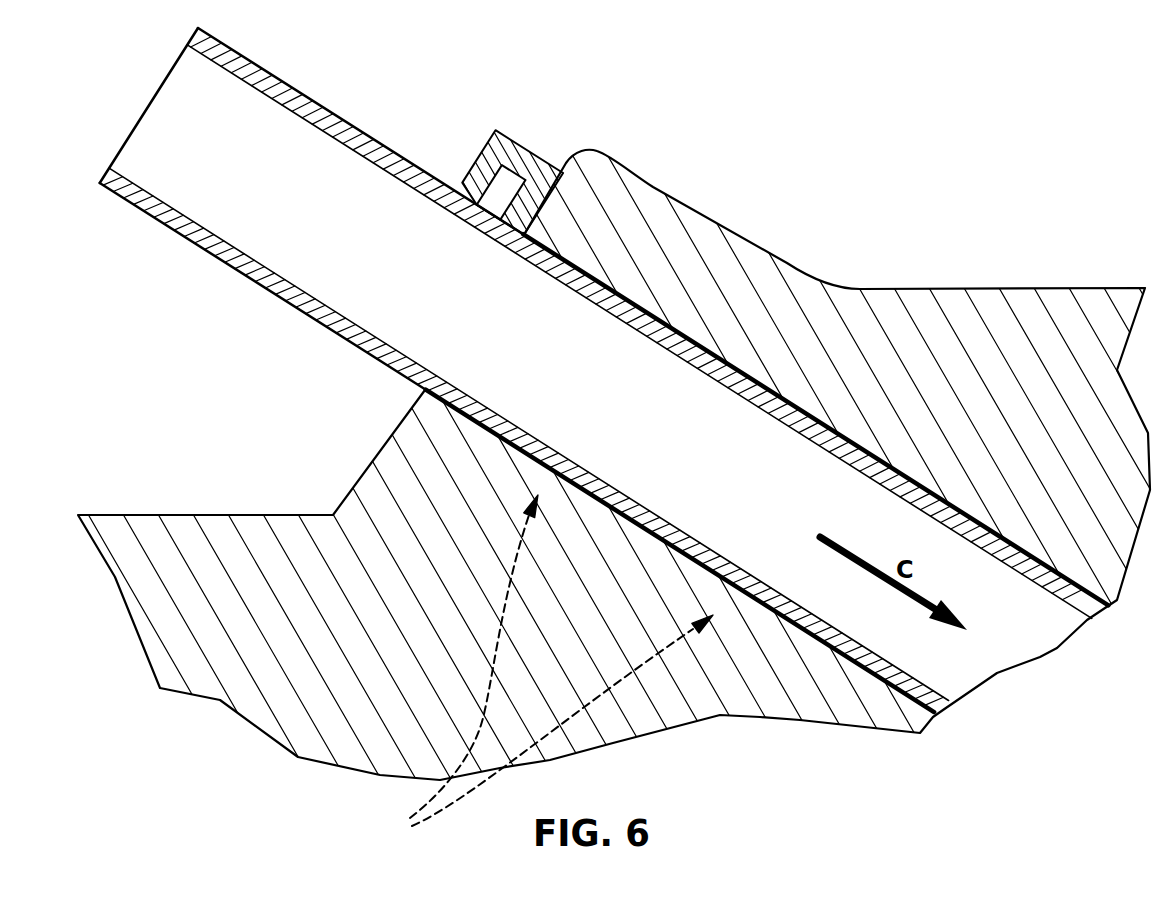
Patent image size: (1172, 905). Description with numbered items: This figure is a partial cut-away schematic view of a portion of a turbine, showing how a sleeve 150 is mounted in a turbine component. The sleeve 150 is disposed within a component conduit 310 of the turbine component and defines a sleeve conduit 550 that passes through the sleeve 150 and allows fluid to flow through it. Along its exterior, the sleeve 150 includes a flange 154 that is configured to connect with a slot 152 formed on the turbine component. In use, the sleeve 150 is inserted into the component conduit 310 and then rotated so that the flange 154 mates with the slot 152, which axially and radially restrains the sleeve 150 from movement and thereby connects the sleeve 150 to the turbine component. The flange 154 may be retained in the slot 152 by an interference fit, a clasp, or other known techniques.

The sleeve 150 is at (157, 208).
The slot 152 is at (488, 142).
The flange 154 is at (500, 190).
The sleeve conduit 550 is at (668, 413).
The component conduit 310 is at (537, 667).